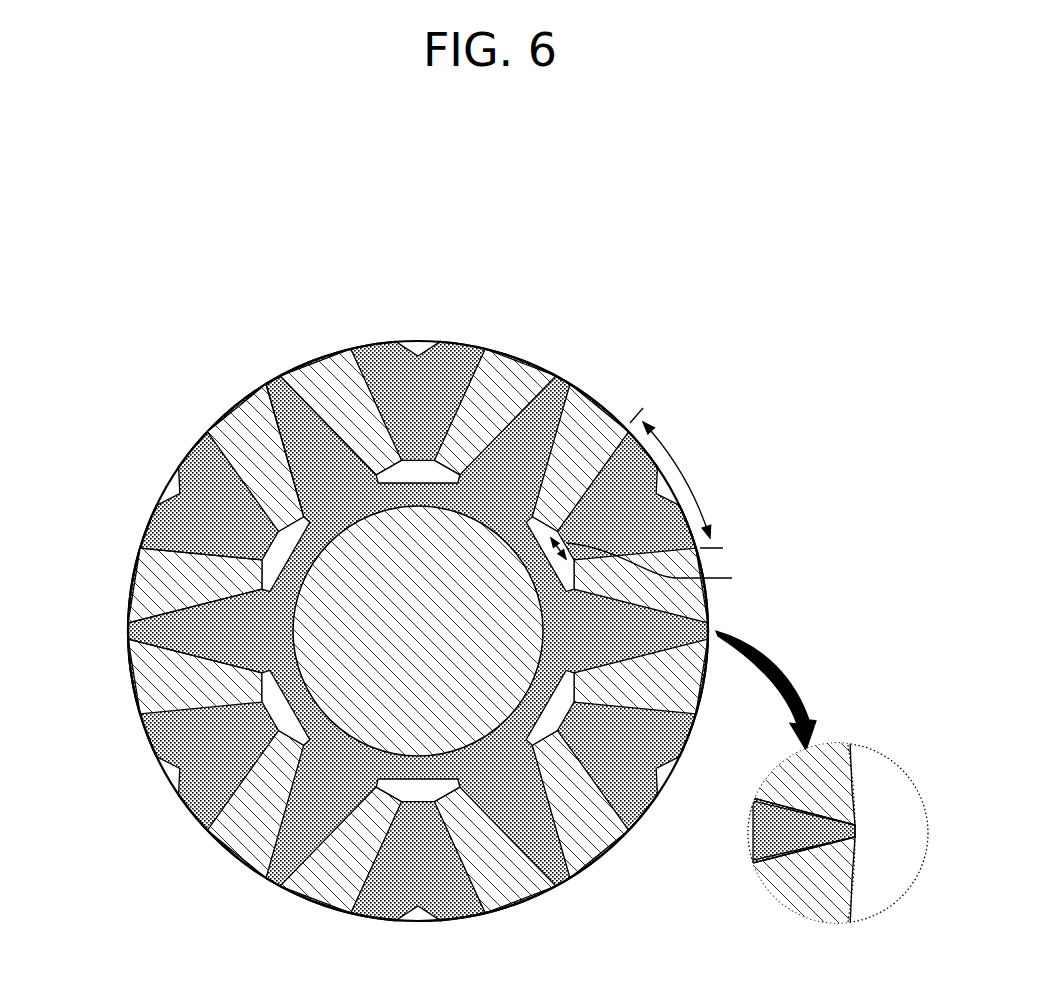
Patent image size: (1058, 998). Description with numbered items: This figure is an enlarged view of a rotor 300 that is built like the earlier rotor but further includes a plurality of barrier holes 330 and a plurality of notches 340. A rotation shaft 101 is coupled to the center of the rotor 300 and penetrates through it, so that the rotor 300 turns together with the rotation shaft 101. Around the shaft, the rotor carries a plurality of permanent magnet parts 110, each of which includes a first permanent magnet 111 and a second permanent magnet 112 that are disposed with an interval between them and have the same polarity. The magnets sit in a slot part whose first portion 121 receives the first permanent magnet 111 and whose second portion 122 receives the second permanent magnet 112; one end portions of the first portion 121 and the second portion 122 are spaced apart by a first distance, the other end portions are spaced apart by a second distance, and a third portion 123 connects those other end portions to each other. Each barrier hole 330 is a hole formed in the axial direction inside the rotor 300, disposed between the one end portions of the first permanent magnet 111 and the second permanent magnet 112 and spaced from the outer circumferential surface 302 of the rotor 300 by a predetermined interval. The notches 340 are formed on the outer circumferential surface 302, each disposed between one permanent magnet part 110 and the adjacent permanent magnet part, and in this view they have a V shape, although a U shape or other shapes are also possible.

The rotor 300 is at (498, 236).
The outer circumferential surface 302 is at (462, 343).
The barrier hole 330 is at (419, 339).
The notch 340 is at (862, 818).
The permanent magnet part 110 is at (99, 492).
The first permanent magnet 111 is at (138, 558).
The second permanent magnet 112 is at (233, 417).
The first portion 121 is at (190, 607).
The second portion 122 is at (283, 432).
The third portion 123 is at (262, 576).
The rotation shaft 101 is at (413, 640).